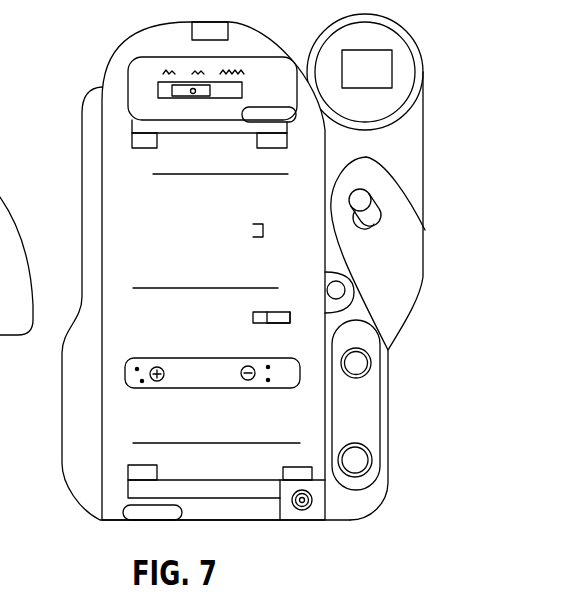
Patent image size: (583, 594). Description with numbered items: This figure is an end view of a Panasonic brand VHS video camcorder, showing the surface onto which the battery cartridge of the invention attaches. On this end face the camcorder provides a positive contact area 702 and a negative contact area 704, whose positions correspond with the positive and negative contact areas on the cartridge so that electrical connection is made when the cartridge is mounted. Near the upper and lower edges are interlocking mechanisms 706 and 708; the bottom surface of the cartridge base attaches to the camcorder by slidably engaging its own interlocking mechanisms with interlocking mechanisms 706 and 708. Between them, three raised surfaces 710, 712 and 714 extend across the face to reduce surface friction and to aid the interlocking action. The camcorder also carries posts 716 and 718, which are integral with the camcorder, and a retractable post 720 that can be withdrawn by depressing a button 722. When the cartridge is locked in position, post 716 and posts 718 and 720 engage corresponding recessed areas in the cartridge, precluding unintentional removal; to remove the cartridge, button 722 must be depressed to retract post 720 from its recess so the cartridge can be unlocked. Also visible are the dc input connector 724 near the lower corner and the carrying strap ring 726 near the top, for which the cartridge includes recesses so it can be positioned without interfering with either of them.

The positive contact area 702 is at (142, 371).
The negative contact area 704 is at (273, 337).
The interlocking mechanism 706 is at (128, 480).
The interlocking mechanism 708 is at (130, 143).
The raised surface 710 is at (208, 443).
The raised surface 712 is at (178, 288).
The raised surface 714 is at (188, 174).
The post 716 is at (263, 224).
The post 718 is at (253, 316).
The retractable post 720 is at (284, 312).
The button 722 is at (328, 285).
The dc input connector 724 is at (288, 505).
The carrying strap ring 726 is at (298, 123).